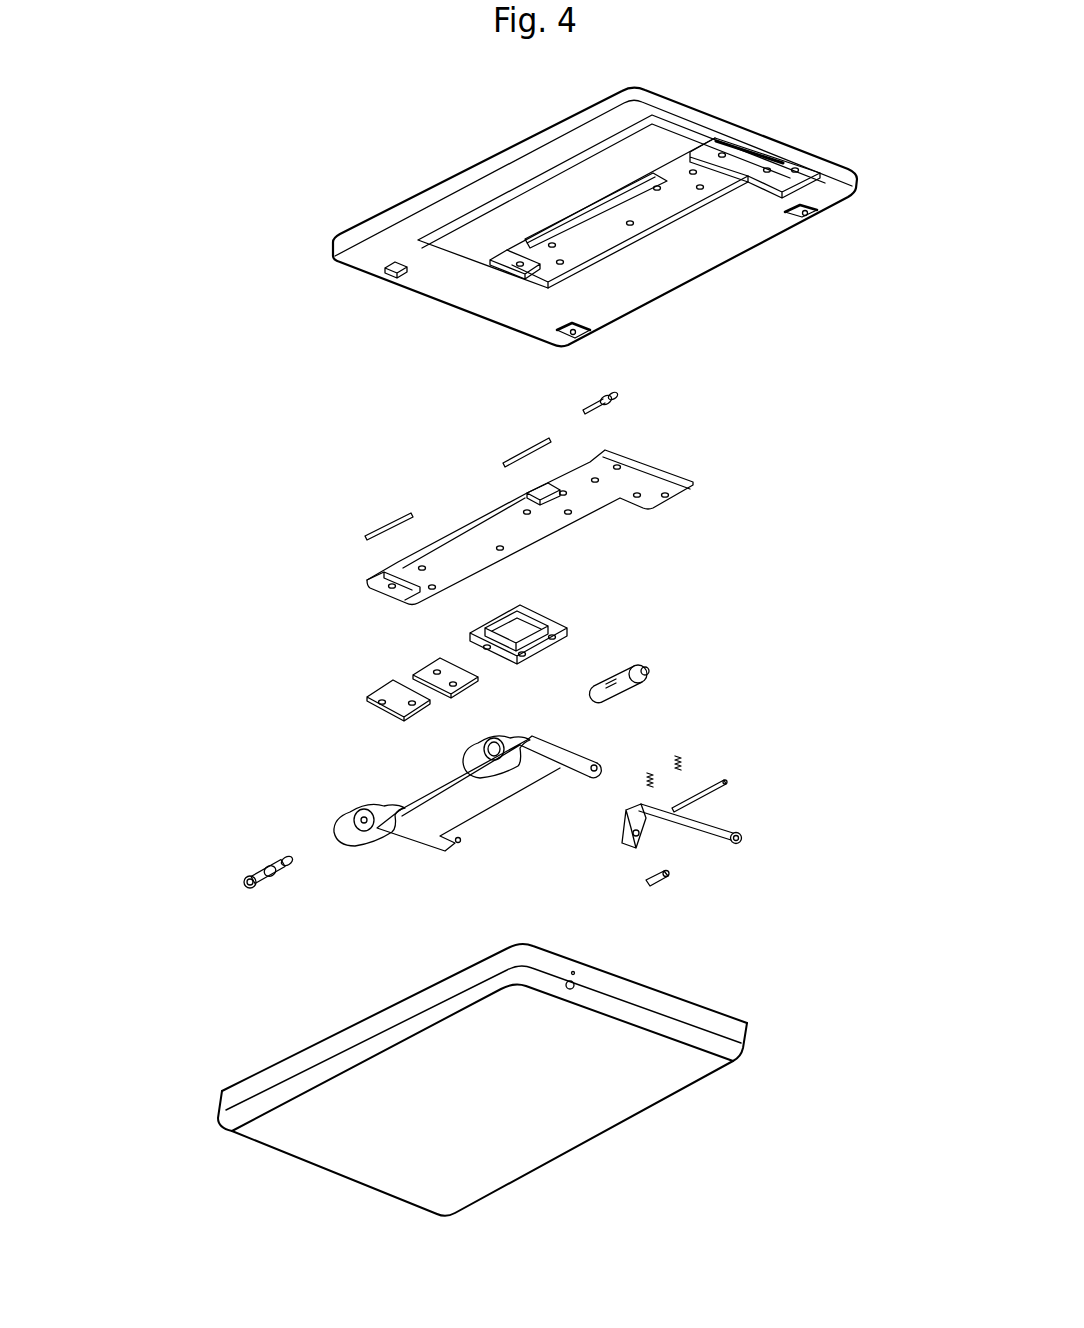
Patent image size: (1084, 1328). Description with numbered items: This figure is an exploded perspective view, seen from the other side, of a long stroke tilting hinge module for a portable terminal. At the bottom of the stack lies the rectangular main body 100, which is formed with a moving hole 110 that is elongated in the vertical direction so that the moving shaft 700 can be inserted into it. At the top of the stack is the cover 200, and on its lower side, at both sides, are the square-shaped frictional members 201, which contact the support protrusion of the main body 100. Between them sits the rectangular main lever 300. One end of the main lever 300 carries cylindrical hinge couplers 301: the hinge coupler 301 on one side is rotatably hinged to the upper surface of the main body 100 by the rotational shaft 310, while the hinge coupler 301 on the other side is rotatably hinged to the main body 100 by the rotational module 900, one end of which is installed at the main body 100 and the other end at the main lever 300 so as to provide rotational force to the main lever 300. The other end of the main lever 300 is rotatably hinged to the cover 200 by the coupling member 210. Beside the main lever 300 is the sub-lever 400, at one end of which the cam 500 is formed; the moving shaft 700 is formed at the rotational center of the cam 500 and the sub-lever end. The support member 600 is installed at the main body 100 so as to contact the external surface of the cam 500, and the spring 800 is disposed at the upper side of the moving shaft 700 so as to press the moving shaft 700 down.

The main body 100 is at (522, 1137).
The moving hole 110 is at (573, 975).
The cover 200 is at (747, 137).
The frictional member 201 is at (801, 218).
The coupling member 210 is at (702, 462).
The main lever 300 is at (472, 798).
The hinge coupler 301 is at (473, 762).
The rotational shaft 310 is at (252, 885).
The sub-lever 400 is at (720, 852).
The cam 500 is at (623, 830).
The support member 600 is at (667, 880).
The moving shaft 700 is at (727, 783).
The spring 800 is at (683, 760).
The rotational module 900 is at (650, 665).